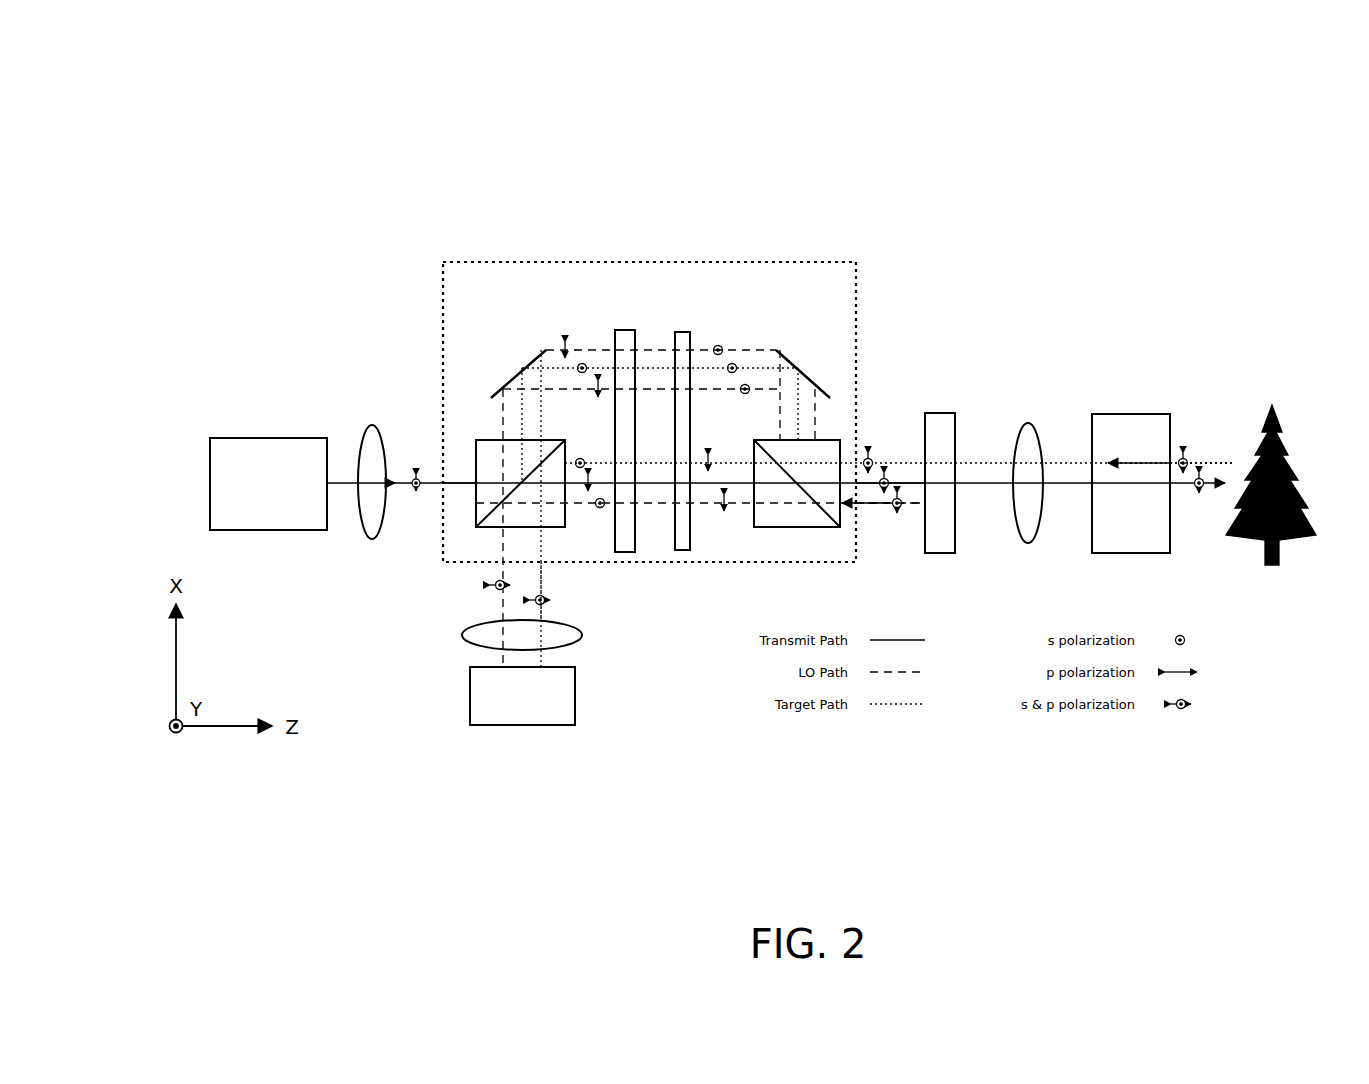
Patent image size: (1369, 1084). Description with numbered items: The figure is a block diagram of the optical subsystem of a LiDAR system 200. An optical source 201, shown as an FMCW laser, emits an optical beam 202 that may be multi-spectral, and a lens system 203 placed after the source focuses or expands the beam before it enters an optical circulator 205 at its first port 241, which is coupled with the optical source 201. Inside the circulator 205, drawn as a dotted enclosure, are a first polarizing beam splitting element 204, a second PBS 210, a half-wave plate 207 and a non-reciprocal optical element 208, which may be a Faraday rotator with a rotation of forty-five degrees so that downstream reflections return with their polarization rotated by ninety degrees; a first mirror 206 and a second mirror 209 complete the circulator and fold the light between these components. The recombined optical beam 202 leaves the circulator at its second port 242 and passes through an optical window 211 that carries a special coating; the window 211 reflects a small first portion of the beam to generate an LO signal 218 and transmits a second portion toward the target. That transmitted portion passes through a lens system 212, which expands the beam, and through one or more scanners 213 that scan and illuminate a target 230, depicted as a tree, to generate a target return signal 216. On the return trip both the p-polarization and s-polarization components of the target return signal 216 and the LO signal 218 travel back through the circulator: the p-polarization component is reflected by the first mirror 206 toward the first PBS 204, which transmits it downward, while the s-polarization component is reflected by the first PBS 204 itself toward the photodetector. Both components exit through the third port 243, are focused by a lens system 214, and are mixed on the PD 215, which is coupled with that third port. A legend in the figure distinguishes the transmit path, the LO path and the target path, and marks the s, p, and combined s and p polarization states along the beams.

The LiDAR system 200 is at (160, 122).
The optical source 201 is at (212, 460).
The optical beam 202 is at (345, 484).
The lens system 203 is at (362, 453).
The first polarizing beam splitting element 204 is at (476, 465).
The optical circulator 205 is at (614, 250).
The first mirror 206 is at (546, 350).
The half-wave plate 207 is at (616, 352).
The non-reciprocal optical element 208 is at (692, 352).
The second mirror 209 is at (776, 352).
The second polarizing beam splitting element 210 is at (840, 420).
The optical window 211 is at (957, 418).
The lens system 212 is at (1040, 450).
The scanners 213 is at (1170, 428).
The lens system 214 is at (483, 630).
The PD 215 is at (475, 695).
The target return signal 216 is at (1135, 468).
The LO signal 218 is at (872, 505).
The target 230 is at (1282, 438).
The first port 241 is at (445, 482).
The second port 242 is at (862, 478).
The third port 243 is at (540, 562).